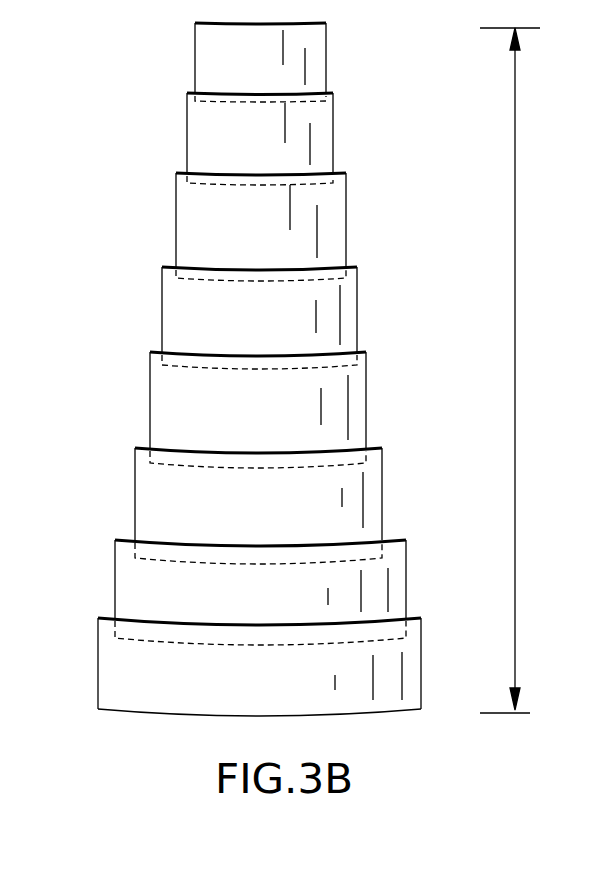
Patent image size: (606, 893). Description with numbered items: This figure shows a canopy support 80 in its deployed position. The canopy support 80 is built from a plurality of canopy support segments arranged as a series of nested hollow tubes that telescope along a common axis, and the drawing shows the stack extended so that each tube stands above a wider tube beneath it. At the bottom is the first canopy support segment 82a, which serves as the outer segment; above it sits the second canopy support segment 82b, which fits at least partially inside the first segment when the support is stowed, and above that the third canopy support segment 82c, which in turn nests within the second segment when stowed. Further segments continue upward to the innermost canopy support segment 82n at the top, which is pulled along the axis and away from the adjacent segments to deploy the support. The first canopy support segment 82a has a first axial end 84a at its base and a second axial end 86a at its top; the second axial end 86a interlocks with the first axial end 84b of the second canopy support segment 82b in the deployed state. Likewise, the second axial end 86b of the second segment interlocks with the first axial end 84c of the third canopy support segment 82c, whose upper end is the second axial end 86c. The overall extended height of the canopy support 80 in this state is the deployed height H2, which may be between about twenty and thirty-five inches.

The canopy support 80 is at (268, 384).
The first canopy support segment 82a is at (268, 659).
The second canopy support segment 82b is at (281, 597).
The third canopy support segment 82c is at (275, 509).
The innermost canopy support segment 82n is at (322, 58).
The first axial end 84a is at (102, 708).
The first axial end 84b is at (182, 642).
The first axial end 84c is at (217, 560).
The second axial end 86a is at (105, 620).
The second axial end 86b is at (124, 540).
The second axial end 86c is at (143, 446).
The deployed height H2 is at (515, 315).